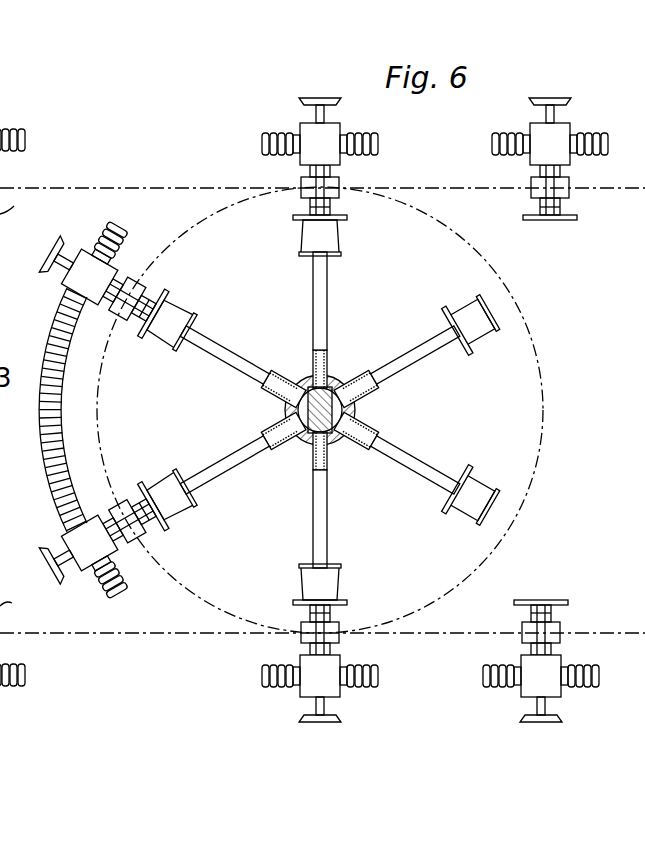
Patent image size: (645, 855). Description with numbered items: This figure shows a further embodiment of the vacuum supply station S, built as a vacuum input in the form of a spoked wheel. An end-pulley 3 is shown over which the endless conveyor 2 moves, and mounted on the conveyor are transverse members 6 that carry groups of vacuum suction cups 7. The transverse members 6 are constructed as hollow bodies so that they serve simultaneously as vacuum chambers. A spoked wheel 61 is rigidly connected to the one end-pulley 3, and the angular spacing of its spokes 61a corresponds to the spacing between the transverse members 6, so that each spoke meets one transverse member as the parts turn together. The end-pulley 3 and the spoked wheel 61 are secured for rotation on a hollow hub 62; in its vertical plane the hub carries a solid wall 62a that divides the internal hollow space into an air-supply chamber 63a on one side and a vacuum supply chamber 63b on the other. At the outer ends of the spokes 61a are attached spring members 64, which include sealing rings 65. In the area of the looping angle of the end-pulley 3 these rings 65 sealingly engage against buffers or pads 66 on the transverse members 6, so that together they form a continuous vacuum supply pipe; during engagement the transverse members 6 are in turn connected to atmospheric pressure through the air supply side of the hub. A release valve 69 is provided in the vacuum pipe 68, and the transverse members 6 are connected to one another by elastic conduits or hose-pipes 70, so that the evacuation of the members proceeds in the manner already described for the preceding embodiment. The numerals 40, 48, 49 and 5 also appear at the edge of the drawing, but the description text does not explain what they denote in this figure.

The endless conveyor 2 is at (492, 188).
The end-pulley 3 is at (530, 325).
The vacuum supply station S is at (322, 285).
The transverse member 6 is at (537, 688).
The vacuum suction cup 7 is at (545, 728).
The spoked wheel 61 is at (205, 478).
The spoke 61a is at (320, 524).
The hollow hub 62 is at (307, 449).
The solid wall 62a is at (322, 393).
The air-supply chamber 63a is at (340, 412).
The vacuum supply chamber 63b is at (285, 411).
The spring member 64 is at (330, 585).
The sealing ring 65 is at (494, 320).
The buffer or pad 66 is at (523, 603).
The vacuum pipe 68 is at (550, 625).
The release valve 69 is at (549, 638).
The elastic conduit or hose-pipe 70 is at (52, 338).
The conduit 48 is at (0, 621).
The conduit 49 is at (0, 643).
The valve assembly 40 is at (10, 423).
The pipe 5 is at (6, 482).